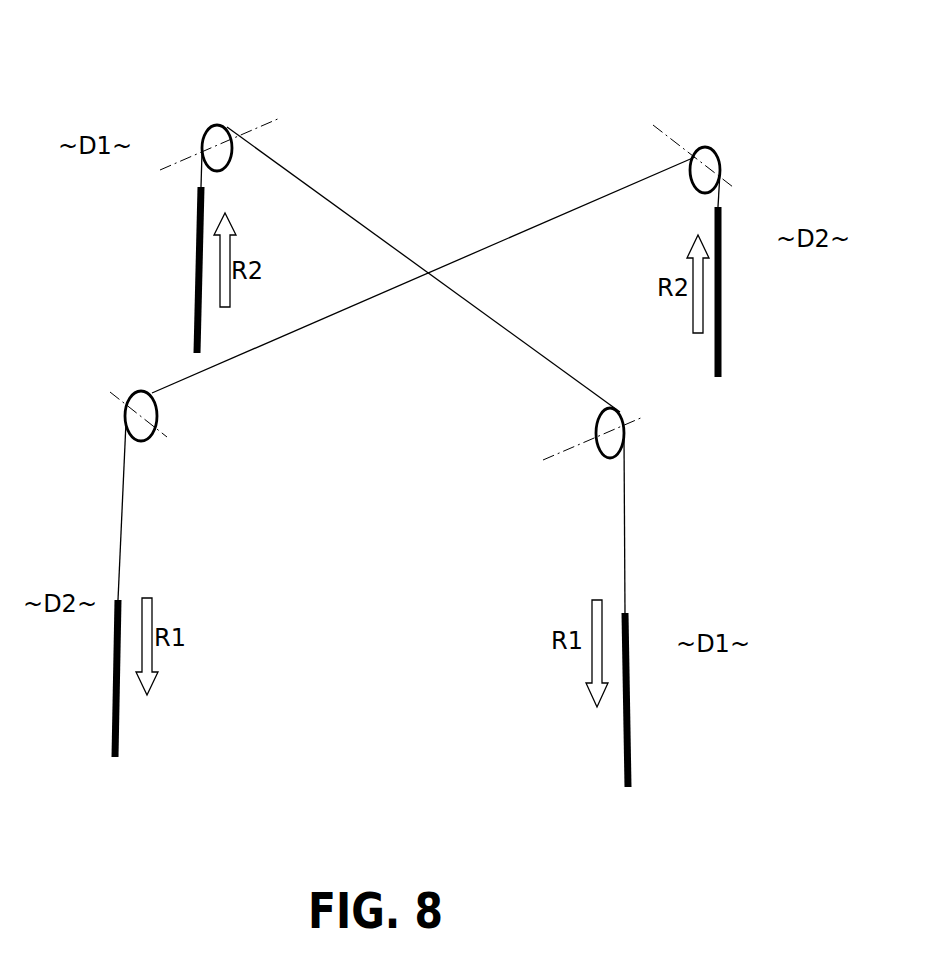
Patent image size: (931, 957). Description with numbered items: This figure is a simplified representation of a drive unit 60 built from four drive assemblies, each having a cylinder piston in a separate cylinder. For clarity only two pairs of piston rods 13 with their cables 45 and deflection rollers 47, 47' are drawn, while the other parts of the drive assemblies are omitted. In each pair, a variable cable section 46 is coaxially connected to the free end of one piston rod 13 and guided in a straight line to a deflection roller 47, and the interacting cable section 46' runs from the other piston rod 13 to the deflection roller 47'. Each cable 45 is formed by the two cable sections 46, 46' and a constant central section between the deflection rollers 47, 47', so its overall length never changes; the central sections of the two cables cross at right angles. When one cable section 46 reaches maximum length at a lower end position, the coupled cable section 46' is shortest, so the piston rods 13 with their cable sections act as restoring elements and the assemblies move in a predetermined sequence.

The drive unit 60 is at (452, 178).
The cable 45 is at (382, 240).
The deflection roller 47 is at (180, 271).
The deflection roller 47' is at (643, 292).
The cable section 46 is at (137, 376).
The cable section 46' is at (712, 392).
The piston rod 13 is at (194, 278).